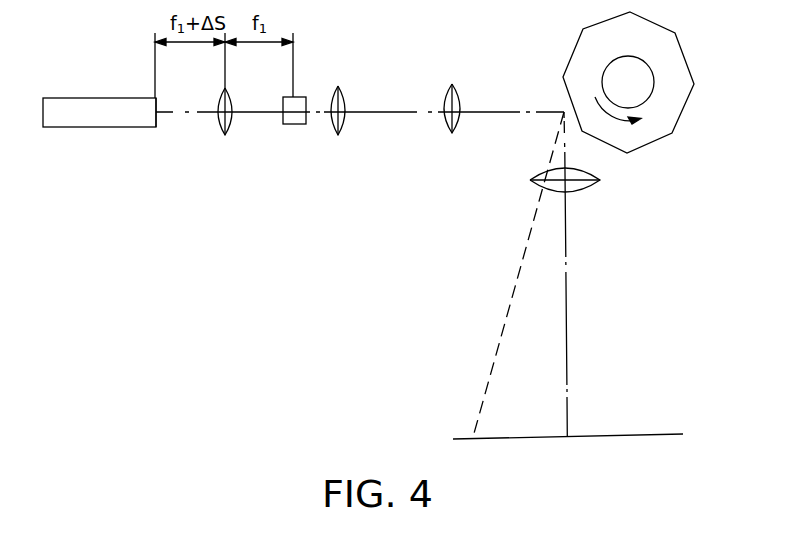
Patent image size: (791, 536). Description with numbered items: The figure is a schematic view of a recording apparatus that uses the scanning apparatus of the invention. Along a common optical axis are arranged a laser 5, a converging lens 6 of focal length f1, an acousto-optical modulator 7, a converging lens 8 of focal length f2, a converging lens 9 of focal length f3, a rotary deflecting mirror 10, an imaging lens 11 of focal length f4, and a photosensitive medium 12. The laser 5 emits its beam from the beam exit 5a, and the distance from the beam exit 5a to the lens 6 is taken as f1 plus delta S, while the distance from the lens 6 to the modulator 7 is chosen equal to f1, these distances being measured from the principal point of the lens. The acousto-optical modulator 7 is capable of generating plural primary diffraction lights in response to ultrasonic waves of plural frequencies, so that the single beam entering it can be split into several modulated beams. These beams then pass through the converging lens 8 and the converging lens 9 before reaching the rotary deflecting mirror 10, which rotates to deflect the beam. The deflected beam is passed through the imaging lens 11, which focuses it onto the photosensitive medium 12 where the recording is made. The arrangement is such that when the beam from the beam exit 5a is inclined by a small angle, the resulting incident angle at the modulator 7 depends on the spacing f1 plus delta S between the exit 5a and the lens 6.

The laser 5 is at (87, 122).
The beam exit of the laser 5a is at (157, 114).
The converging lens 6 is at (228, 124).
The acousto-optical modulator 7 is at (289, 123).
The converging lens 8 is at (342, 125).
The converging lens 9 is at (455, 124).
The rotary deflecting mirror 10 is at (680, 111).
The imaging lens 11 is at (590, 184).
The photosensitive medium 12 is at (665, 433).